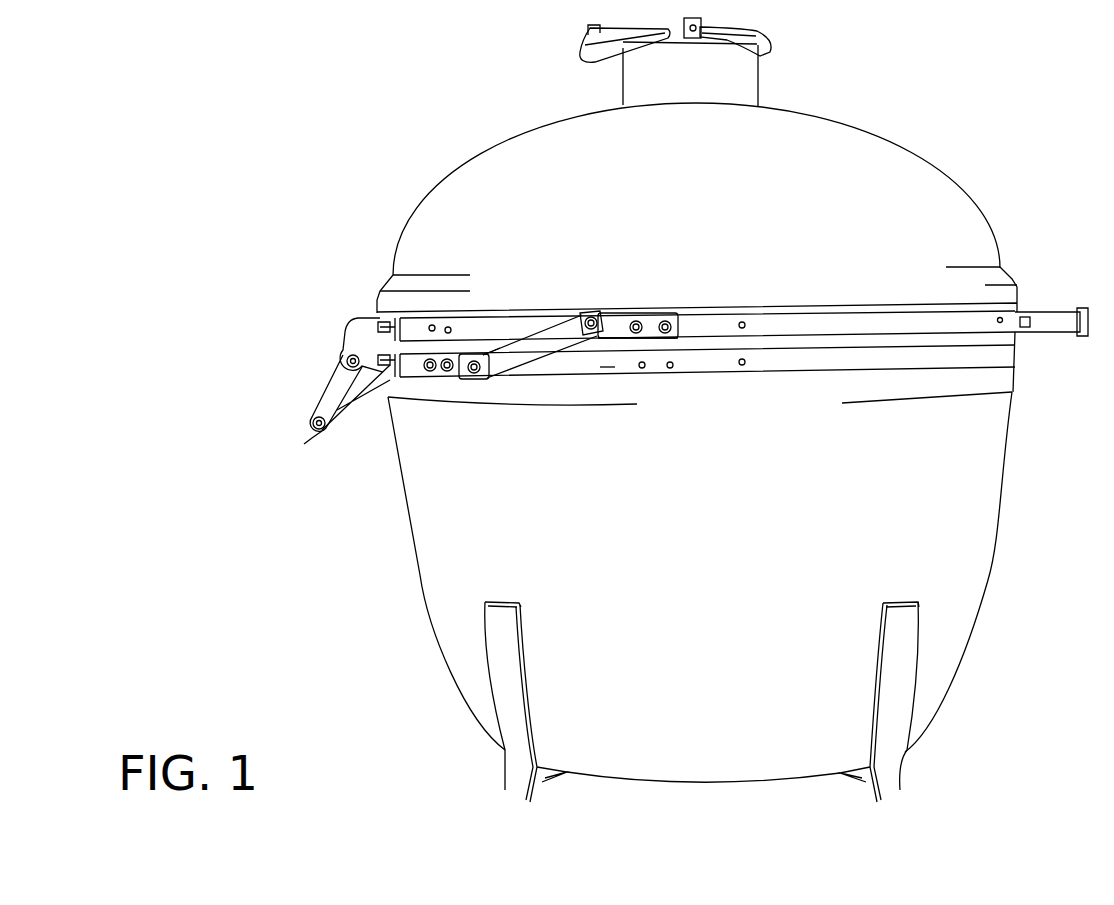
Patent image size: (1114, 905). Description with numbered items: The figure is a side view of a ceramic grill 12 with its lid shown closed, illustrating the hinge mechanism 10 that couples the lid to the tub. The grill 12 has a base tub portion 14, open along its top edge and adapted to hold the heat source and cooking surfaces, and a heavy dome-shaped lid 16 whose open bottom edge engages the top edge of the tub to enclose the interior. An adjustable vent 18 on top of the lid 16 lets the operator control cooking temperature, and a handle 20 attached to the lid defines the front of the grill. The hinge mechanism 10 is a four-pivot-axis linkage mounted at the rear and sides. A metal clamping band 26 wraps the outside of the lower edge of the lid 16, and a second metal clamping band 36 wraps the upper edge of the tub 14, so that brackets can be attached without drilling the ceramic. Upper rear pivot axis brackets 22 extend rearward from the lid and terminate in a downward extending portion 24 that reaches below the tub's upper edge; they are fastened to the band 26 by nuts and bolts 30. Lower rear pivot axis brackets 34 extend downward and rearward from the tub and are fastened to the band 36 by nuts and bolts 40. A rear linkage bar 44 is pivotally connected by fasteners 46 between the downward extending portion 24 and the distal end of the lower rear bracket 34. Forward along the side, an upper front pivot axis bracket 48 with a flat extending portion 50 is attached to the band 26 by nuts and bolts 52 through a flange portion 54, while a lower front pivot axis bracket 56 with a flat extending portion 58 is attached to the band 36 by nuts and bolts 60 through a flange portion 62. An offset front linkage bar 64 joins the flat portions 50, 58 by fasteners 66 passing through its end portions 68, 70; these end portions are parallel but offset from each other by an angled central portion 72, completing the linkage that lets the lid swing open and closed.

The hinge mechanism 10 is at (290, 385).
The ceramic grill 12 is at (933, 152).
The base tub portion 14 is at (410, 583).
The lid 16 is at (465, 154).
The adjustable vent 18 is at (666, 38).
The handle 20 is at (1047, 303).
The upper rear pivot axis bracket 22 is at (353, 315).
The downward extending portion 24 is at (340, 352).
The metal clamping band 26 is at (995, 324).
The nuts and bolts 30 is at (387, 395).
The lower rear pivot axis bracket 34 is at (333, 409).
The metal clamping band 36 is at (978, 362).
The nuts and bolts 40 is at (356, 415).
The rear linkage bar 44 is at (325, 379).
The fasteners 46 is at (302, 456).
The upper front pivot axis bracket 48 is at (653, 310).
The flat extending portion 50 is at (603, 370).
The nuts and bolts 52 is at (672, 320).
The flange portion 54 is at (650, 340).
The lower front pivot axis bracket 56 is at (430, 378).
The flat extending portion 58 is at (480, 350).
The nuts and bolts 60 is at (432, 355).
The flange portion 62 is at (449, 355).
The offset front linkage bar 64 is at (533, 353).
The fasteners 66 is at (583, 312).
The end portion 68 is at (607, 318).
The end portion 70 is at (509, 335).
The central portion 72 is at (585, 315).